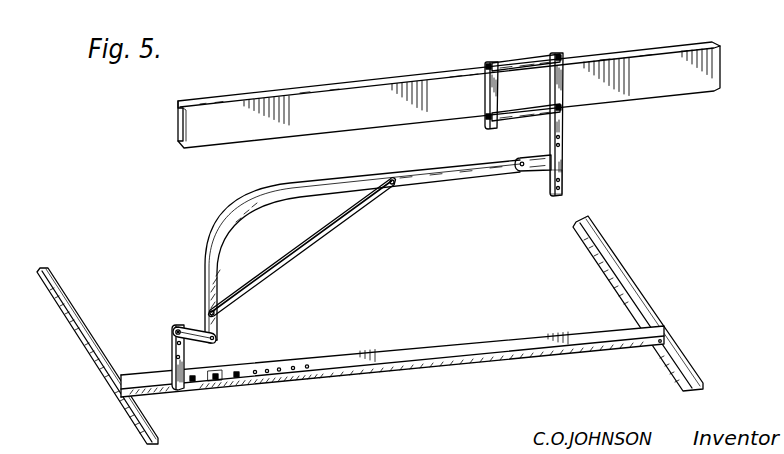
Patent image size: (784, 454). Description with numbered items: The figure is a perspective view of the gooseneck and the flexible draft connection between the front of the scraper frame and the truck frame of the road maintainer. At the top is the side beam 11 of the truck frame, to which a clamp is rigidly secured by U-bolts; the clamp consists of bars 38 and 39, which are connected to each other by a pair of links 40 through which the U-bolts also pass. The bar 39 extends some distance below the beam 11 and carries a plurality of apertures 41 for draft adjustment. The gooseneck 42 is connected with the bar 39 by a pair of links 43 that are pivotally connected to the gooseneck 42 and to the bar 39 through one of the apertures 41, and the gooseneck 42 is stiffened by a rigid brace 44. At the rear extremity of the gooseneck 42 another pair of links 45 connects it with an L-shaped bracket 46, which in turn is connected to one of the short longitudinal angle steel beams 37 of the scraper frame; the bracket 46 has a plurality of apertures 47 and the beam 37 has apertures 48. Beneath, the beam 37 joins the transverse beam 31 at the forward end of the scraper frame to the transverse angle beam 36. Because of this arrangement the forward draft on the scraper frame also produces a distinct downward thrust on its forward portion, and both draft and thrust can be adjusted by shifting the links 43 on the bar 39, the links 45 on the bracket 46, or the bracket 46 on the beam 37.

The side beam 11 is at (290, 103).
The beam 31 is at (600, 237).
The angle beam 36 is at (56, 283).
The longitudinal angle steel beam 37 is at (480, 347).
The bar 38 is at (492, 88).
The bar 39 is at (562, 88).
The links 40 is at (522, 58).
The apertures 41 is at (564, 179).
The gooseneck 42 is at (252, 213).
The links 43 is at (543, 172).
The rigid brace 44 is at (302, 243).
The links 45 is at (197, 327).
The L-shaped bracket 46 is at (172, 353).
The apertures 47 is at (175, 329).
The apertures 48 is at (294, 371).